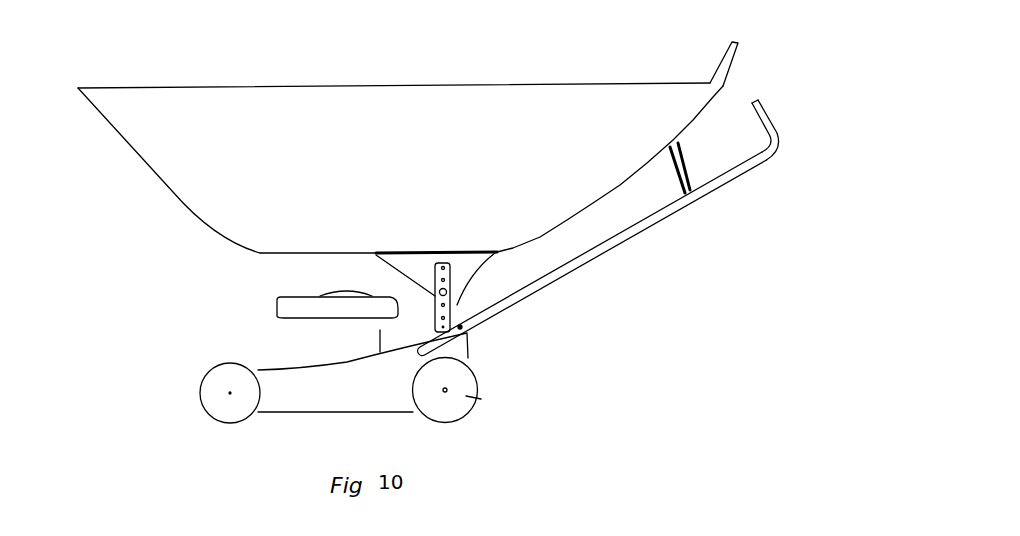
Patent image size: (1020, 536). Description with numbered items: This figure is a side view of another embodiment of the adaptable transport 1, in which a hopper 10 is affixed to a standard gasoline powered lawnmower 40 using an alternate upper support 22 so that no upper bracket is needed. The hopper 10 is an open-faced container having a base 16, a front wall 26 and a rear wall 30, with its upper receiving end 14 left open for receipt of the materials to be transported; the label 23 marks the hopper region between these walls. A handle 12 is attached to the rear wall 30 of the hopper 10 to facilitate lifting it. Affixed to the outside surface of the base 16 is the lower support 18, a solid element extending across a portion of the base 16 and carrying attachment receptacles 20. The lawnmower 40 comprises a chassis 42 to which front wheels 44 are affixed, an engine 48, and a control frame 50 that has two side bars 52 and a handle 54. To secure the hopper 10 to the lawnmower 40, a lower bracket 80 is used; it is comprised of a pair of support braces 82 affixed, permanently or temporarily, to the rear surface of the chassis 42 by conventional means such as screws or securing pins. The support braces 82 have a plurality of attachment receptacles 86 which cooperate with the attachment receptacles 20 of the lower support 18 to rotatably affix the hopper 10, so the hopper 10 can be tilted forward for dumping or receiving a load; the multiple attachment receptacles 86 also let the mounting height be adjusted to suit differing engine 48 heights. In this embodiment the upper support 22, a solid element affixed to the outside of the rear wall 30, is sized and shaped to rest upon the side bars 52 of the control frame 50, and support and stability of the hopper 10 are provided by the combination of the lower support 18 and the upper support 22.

The adaptable transport 1 is at (787, 217).
The hopper 10 is at (111, 181).
The handle 12 is at (736, 50).
The upper receiving end 14 is at (415, 83).
The base 16 is at (293, 252).
The lower support 18 is at (465, 273).
The attachment receptacles 20 is at (450, 293).
The upper support 22 is at (682, 168).
The hopper side wall 23 is at (422, 170).
The front wall 26 is at (170, 200).
The rear wall 30 is at (620, 187).
The lawnmower 40 is at (535, 370).
The chassis 42 is at (318, 395).
The front wheels 44 is at (222, 413).
The engine 48 is at (313, 335).
The control frame 50 is at (672, 246).
The side bars 52 is at (606, 255).
The handle 54 is at (765, 127).
The lower bracket 80 is at (481, 310).
The support braces 82 is at (470, 327).
The attachment receptacles 86 is at (438, 309).